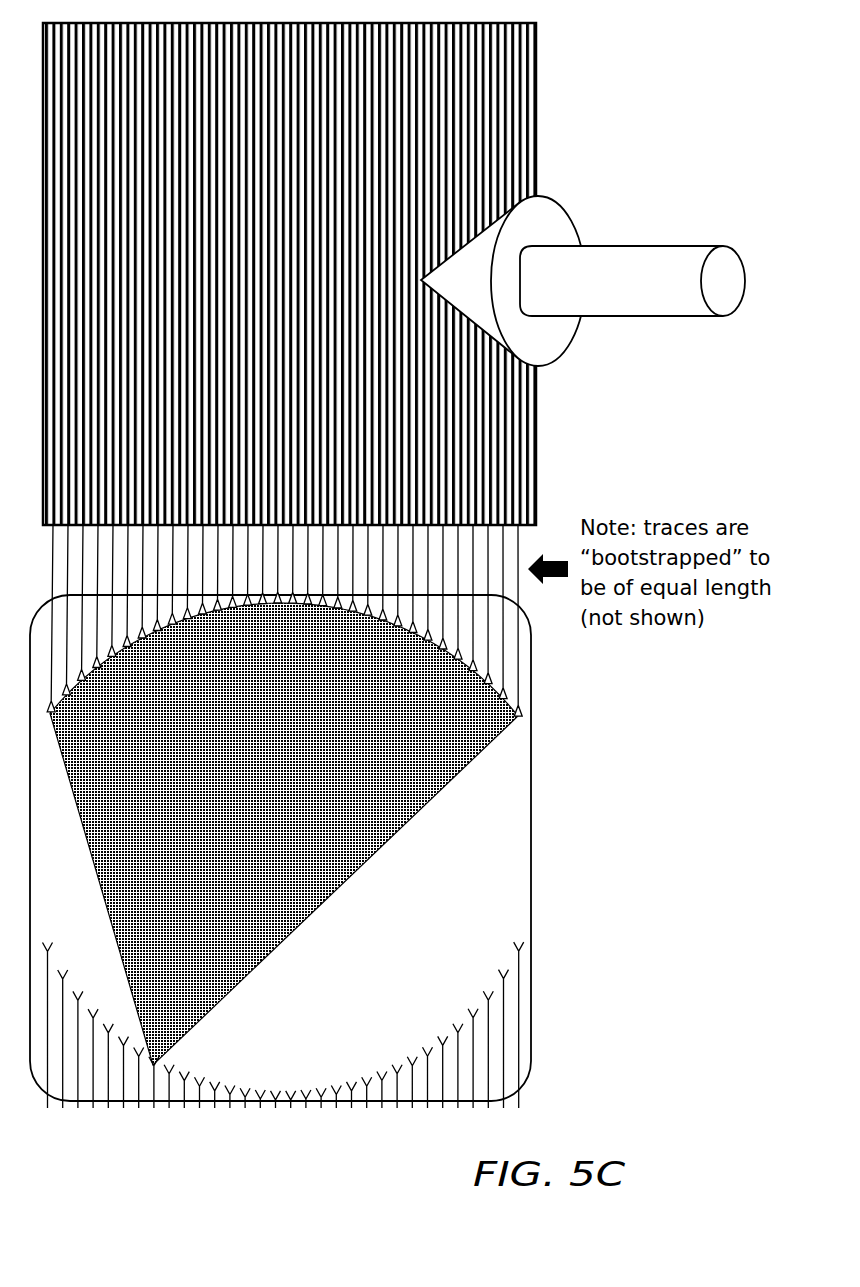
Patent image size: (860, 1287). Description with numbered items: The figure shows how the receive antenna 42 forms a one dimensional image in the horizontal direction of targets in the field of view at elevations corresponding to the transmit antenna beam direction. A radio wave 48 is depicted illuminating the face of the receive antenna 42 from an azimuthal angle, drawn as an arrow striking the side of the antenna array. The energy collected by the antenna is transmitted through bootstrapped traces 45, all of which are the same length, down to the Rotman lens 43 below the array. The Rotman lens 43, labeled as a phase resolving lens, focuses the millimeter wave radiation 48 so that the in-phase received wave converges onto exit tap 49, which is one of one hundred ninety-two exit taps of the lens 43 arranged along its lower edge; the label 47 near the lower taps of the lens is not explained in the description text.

The receive antenna 42 is at (532, 92).
The radio wave 48 is at (648, 240).
The bootstrapped traces 45 is at (553, 613).
The Rotman lens 43 is at (574, 811).
The output taps 47 is at (549, 984).
The exit tap 49 is at (155, 1130).